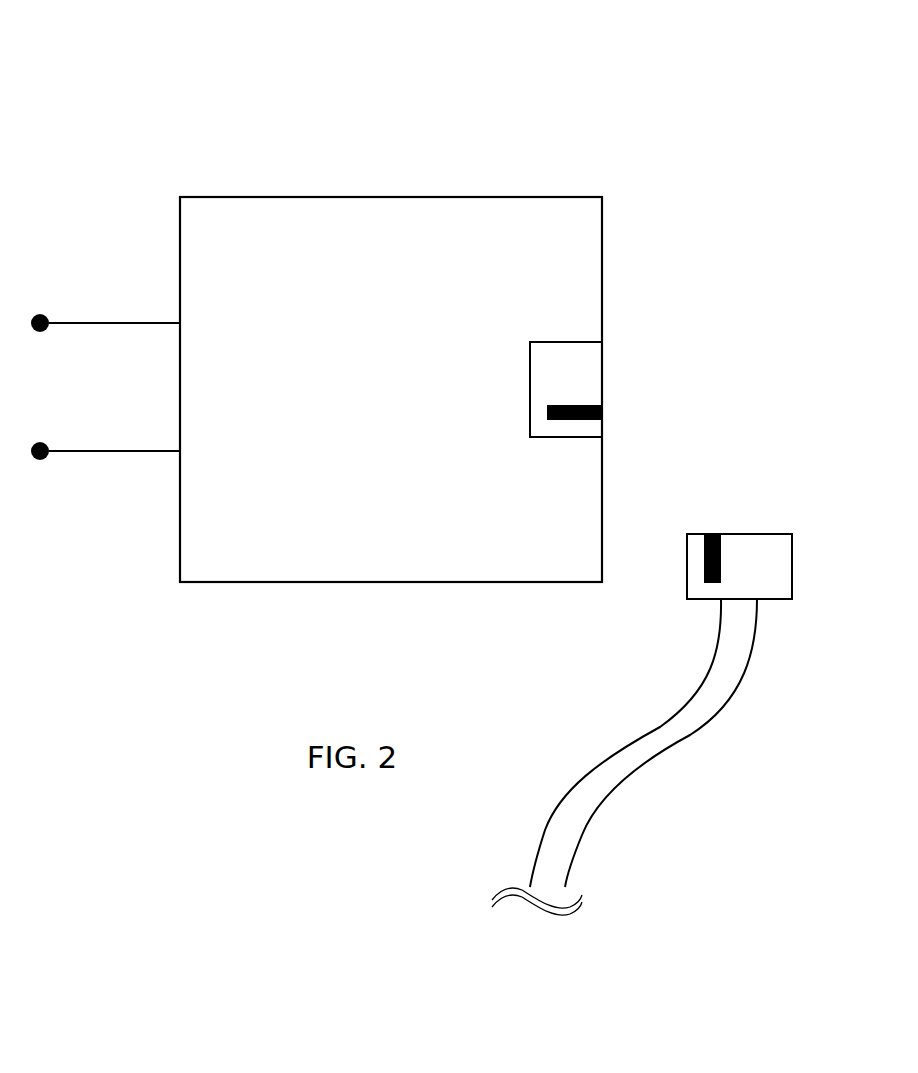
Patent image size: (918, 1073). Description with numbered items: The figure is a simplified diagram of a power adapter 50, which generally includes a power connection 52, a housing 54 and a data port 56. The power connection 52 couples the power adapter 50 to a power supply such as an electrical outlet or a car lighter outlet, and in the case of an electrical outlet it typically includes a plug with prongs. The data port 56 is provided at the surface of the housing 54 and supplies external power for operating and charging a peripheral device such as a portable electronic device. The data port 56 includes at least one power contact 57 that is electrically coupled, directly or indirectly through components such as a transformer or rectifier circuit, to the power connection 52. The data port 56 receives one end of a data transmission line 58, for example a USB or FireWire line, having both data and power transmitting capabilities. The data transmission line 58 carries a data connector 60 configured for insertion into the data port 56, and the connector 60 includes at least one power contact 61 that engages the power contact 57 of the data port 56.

The power adapter 50 is at (280, 70).
The power connection 52 is at (73, 322).
The housing 54 is at (510, 197).
The data port 56 is at (583, 374).
The power contact 57 is at (602, 415).
The data transmission line 58 is at (617, 758).
The data connector 60 is at (687, 583).
The power contact 61 is at (710, 534).